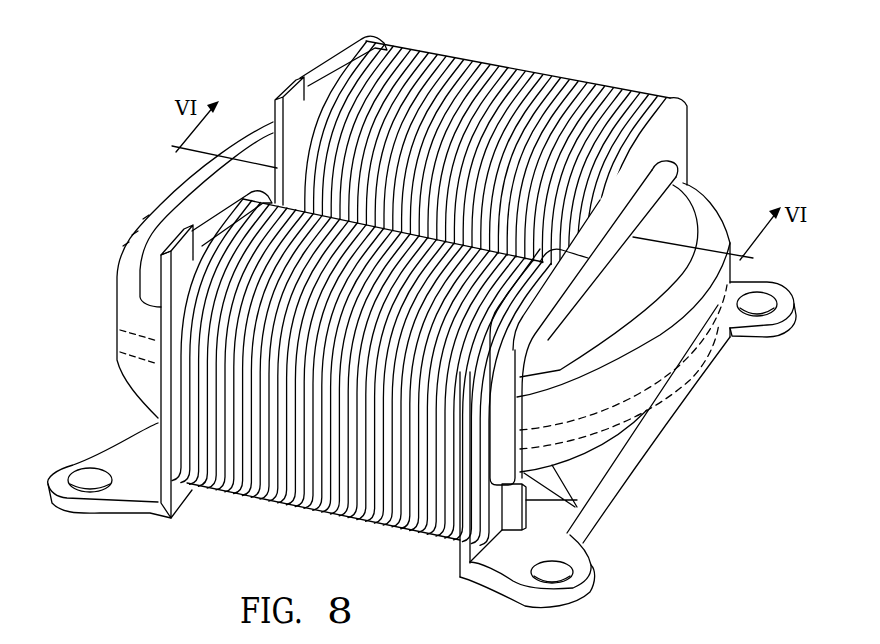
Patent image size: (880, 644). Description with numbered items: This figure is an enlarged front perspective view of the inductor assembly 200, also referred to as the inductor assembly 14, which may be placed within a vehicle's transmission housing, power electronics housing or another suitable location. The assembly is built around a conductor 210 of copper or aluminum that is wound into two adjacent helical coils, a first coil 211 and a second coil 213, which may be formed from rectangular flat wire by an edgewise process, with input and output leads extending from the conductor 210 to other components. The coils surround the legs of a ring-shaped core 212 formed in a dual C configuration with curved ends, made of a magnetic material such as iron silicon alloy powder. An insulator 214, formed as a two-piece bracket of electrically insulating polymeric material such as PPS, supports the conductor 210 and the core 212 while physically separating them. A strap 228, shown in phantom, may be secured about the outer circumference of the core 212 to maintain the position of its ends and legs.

The inductor assembly 14 is at (680, 58).
The inductor assembly 200 is at (146, 93).
The conductor 210 is at (530, 66).
The first coil 211 is at (427, 56).
The core 212 is at (707, 200).
The second coil 213 is at (300, 510).
The insulator 214 is at (687, 137).
The strap 228 is at (686, 392).